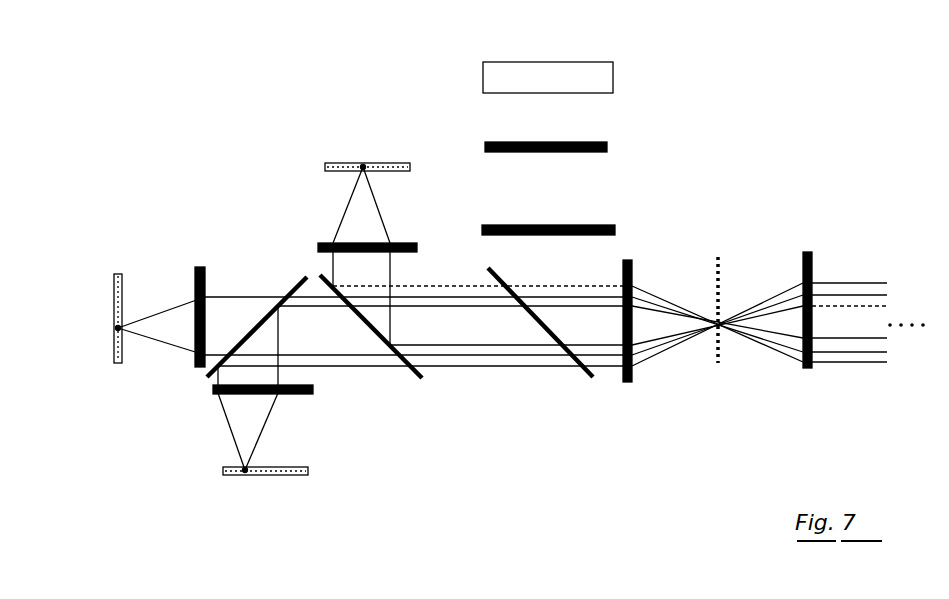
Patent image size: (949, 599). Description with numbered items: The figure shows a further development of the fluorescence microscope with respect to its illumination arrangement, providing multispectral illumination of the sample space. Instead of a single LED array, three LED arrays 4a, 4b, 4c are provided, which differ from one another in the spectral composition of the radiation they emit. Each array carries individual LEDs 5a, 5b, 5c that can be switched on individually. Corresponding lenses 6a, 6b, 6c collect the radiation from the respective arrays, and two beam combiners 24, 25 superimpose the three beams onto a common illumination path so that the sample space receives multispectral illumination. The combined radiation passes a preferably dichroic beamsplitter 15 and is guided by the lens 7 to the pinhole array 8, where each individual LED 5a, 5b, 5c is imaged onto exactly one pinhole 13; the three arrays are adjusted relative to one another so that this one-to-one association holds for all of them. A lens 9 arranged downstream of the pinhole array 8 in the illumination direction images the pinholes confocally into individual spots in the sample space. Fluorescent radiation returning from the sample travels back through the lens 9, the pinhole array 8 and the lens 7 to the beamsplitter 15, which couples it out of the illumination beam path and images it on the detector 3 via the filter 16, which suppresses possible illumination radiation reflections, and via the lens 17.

The detector 3 is at (597, 62).
The lens 17 is at (603, 142).
The filter 16 is at (607, 225).
The pinhole 13 is at (713, 278).
The pinhole array 8 is at (718, 363).
The lens 9 is at (812, 253).
The lens 7 is at (632, 380).
The dichroic beamsplitter 15 is at (593, 380).
The beam combiner 25 is at (422, 380).
The beam combiner 24 is at (290, 284).
The lens 6a is at (200, 267).
The lens 6b is at (313, 393).
The lens 6c is at (323, 243).
The LED array 4a is at (118, 363).
The LED array 4b is at (308, 475).
The LED array 4c is at (332, 163).
The LED 5a is at (118, 328).
The LED 5b is at (245, 475).
The LED 5c is at (363, 167).